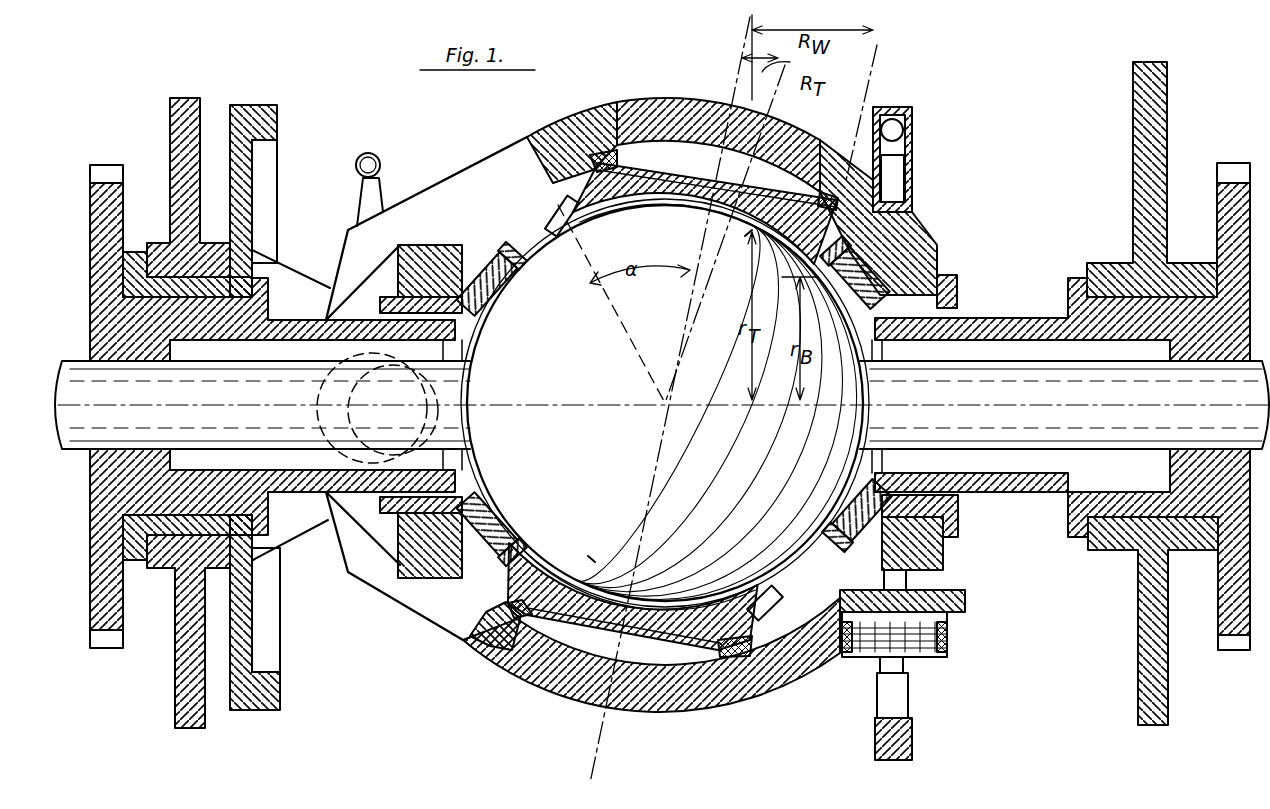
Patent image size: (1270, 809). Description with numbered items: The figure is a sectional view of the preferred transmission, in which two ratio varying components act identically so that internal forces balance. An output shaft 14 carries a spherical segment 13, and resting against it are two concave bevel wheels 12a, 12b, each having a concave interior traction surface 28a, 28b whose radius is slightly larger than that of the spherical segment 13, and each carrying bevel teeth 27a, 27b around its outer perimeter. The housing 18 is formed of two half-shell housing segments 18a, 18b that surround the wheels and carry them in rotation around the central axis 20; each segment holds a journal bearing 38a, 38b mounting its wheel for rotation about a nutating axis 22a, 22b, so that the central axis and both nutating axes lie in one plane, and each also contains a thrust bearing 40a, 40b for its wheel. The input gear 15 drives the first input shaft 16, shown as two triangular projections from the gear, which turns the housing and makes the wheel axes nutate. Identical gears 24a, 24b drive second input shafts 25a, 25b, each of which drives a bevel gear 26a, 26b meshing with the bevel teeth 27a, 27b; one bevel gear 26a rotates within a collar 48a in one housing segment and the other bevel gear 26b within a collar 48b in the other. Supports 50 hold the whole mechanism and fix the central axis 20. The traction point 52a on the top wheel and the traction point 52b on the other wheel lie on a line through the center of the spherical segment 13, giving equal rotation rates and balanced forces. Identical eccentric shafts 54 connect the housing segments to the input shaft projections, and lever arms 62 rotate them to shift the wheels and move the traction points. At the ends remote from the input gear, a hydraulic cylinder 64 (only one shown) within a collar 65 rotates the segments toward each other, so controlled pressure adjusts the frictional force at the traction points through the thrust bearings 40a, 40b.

The concave bevel wheel 12a is at (705, 205).
The concave bevel wheel 12b is at (686, 610).
The spherical segment 13 is at (612, 440).
The output shaft 14 is at (185, 395).
The input gear 15 is at (280, 130).
The first input shaft 16 is at (291, 277).
The housing 18 is at (462, 175).
The housing segment 18a is at (662, 108).
The housing segment 18b is at (565, 680).
The central axis 20 is at (970, 410).
The nutating axis 22a is at (690, 312).
The nutating axis 22b is at (660, 500).
The gear 24a is at (1225, 168).
The gear 24b is at (112, 172).
The second input shaft 25a is at (1015, 325).
The second input shaft 25b is at (312, 330).
The bevel gear 26a is at (865, 355).
The bevel gear 26b is at (480, 295).
The bevel teeth 27a is at (550, 215).
The bevel teeth 27b is at (785, 592).
The concave interior traction surface 28a is at (590, 215).
The concave interior traction surface 28b is at (745, 580).
The journal bearing 38a is at (570, 150).
The journal bearing 38b is at (478, 625).
The thrust bearing 40a is at (605, 150).
The thrust bearing 40b is at (507, 618).
The collar 48a is at (945, 262).
The collar 48b is at (432, 258).
The supports 50 is at (184, 112).
The traction point 52a is at (748, 236).
The traction point 52b is at (590, 556).
The eccentric shaft 54 is at (300, 386).
The lever arm 62 is at (372, 192).
The hydraulic cylinder 64 is at (900, 175).
The collar 65 is at (912, 120).